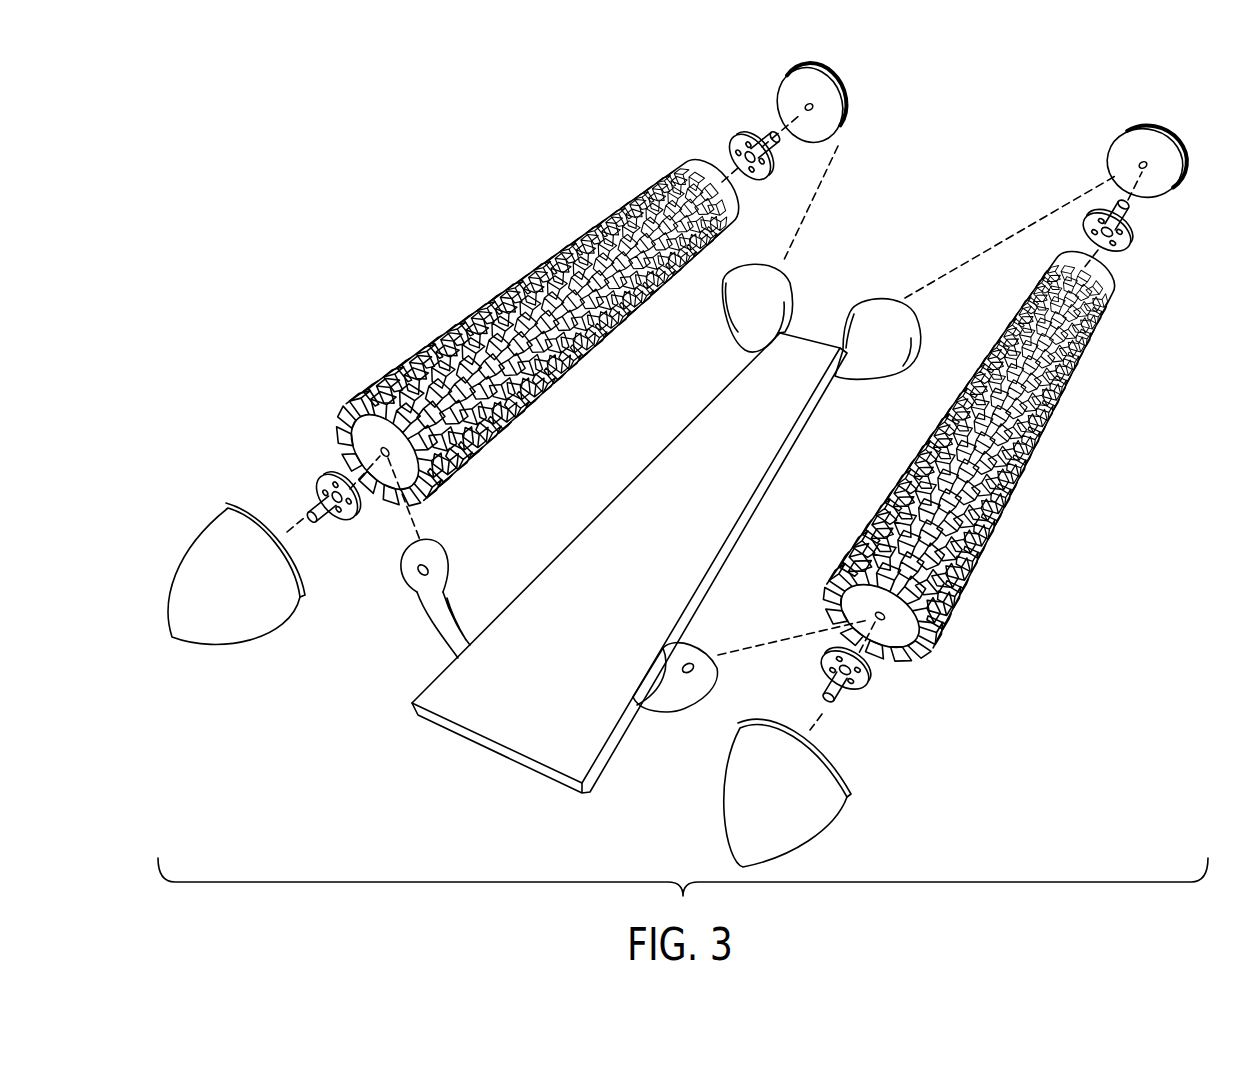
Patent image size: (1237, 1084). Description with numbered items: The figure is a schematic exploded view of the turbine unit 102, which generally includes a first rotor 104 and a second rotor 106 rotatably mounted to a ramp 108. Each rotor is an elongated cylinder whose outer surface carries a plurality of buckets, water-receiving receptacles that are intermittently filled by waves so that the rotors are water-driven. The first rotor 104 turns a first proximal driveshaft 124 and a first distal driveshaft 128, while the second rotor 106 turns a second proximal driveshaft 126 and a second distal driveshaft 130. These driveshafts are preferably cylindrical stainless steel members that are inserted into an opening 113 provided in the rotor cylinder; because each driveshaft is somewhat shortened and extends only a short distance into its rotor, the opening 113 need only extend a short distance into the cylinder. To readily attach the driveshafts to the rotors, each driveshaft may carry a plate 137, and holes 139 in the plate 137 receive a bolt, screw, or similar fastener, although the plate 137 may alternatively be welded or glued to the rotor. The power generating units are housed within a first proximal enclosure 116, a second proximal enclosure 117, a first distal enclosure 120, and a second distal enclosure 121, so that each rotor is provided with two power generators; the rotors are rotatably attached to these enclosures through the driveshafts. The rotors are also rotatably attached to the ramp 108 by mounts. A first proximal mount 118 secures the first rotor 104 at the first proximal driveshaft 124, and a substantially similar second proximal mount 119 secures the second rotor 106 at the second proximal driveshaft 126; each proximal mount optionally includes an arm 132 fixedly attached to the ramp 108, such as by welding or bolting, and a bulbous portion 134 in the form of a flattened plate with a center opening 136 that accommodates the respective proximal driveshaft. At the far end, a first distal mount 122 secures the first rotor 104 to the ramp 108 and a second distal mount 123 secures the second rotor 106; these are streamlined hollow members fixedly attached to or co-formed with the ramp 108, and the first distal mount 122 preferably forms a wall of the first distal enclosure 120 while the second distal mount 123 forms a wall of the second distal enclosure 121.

The turbine unit 102 is at (512, 174).
The first rotor 104 is at (525, 306).
The second rotor 106 is at (1025, 480).
The ramp 108 is at (638, 593).
The opening 113 is at (360, 422).
The first proximal enclosure 116 is at (200, 534).
The second proximal enclosure 117 is at (845, 826).
The first proximal mount 118 is at (436, 590).
The second proximal mount 119 is at (710, 647).
The first distal enclosure 120 is at (848, 96).
The second distal enclosure 121 is at (1187, 146).
The first distal mount 122 is at (795, 294).
The second distal mount 123 is at (887, 293).
The first proximal driveshaft 124 is at (310, 508).
The second proximal driveshaft 126 is at (840, 705).
The first distal driveshaft 128 is at (765, 133).
The second distal driveshaft 130 is at (1126, 216).
The arm 132 is at (437, 626).
The bulbous portion 134 is at (406, 586).
The center opening 136 is at (428, 562).
The plate 137 is at (328, 474).
The hole 139 is at (338, 520).